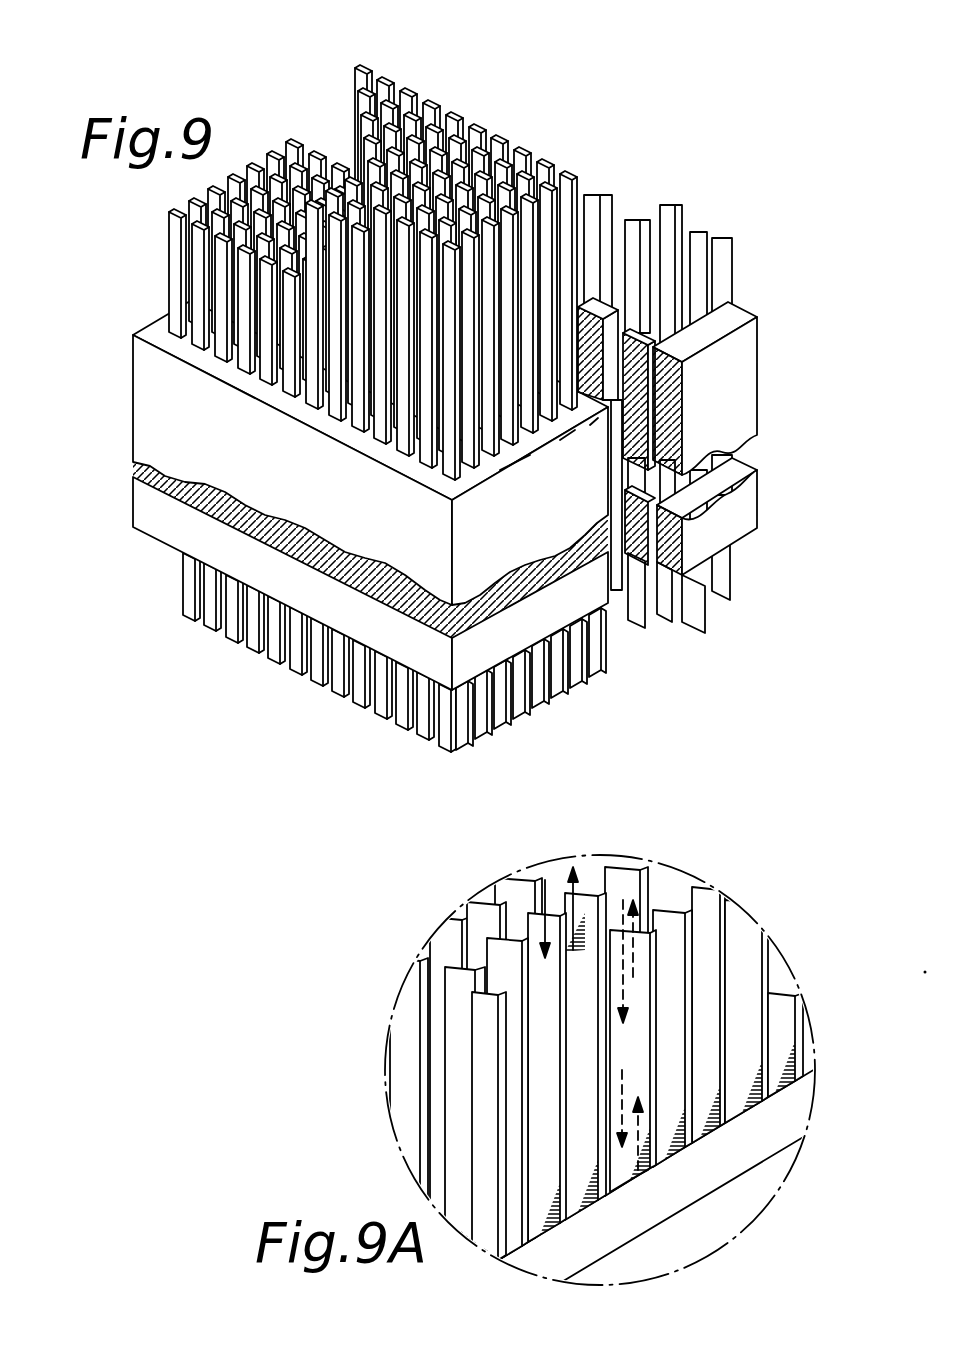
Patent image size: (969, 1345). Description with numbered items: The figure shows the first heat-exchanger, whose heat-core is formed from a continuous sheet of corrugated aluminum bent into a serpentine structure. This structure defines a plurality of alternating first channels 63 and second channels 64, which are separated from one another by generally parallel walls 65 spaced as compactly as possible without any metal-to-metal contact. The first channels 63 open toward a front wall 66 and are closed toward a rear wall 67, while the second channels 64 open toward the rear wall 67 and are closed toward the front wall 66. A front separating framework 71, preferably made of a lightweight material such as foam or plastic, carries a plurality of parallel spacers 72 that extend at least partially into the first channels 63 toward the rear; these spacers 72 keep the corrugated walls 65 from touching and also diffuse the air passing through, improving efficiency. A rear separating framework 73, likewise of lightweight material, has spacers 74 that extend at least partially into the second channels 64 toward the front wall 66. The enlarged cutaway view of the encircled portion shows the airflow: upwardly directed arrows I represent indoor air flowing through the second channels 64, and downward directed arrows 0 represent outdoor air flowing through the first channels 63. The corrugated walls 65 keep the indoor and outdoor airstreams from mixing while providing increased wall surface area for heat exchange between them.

In FIG. 9, the first channels 63 is at (255, 325).
In FIG. 9A, the first channels 63 is at (600, 870).
In FIG. 9, the second channels 64 is at (470, 115).
In FIG. 9A, the second channels 64 is at (660, 900).
In FIG. 9, the walls 65 is at (268, 192).
In FIG. 9A, the walls 65 is at (485, 1090).
In FIG. 9, the front wall 66 is at (150, 410).
In FIG. 9, the rear wall 67 is at (722, 300).
In FIG. 9, the front separating framework 71 is at (424, 654).
In FIG. 9, the spacers 72 is at (183, 498).
In FIG. 9, the rear separating framework 73 is at (757, 360).
In FIG. 9, the spacers 74 is at (688, 352).
In FIG. 9A, the downward directed arrows 0 is at (543, 905).
In FIG. 9A, the upwardly directed arrows I is at (632, 963).